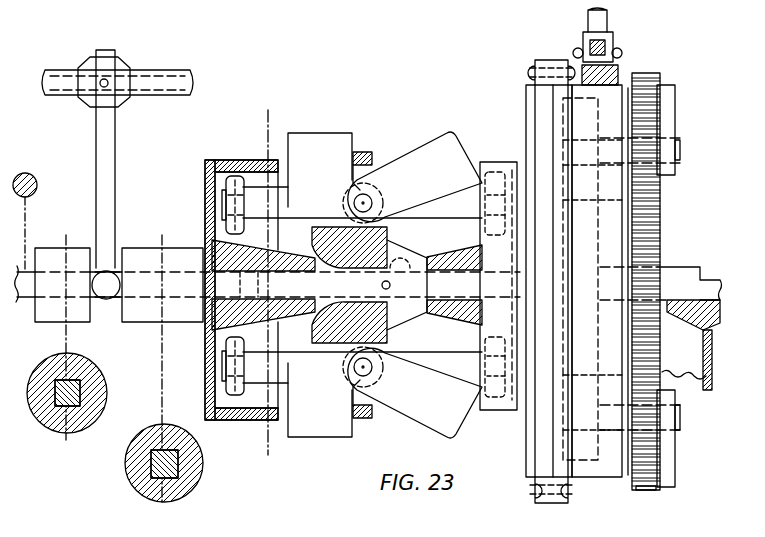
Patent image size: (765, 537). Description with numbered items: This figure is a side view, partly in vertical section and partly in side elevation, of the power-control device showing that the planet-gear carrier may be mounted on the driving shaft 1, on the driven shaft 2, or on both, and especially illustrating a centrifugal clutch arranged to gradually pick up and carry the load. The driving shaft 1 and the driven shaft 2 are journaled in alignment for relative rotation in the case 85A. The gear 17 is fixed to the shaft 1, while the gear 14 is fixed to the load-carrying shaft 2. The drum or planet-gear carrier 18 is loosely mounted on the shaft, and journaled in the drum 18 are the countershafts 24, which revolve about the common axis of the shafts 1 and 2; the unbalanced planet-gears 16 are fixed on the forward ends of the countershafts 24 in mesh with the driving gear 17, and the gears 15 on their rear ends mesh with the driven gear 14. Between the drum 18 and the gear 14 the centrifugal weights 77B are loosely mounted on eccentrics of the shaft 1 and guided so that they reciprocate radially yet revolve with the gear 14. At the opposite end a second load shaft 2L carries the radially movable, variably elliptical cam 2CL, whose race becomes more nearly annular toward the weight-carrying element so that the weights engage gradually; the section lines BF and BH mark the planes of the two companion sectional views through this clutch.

The driving shaft 1 is at (683, 267).
The driven shaft 2 is at (454, 285).
The second load shaft 2L is at (21, 302).
The variably elliptical cam 2CL is at (203, 190).
The section line BF— BF is at (234, 422).
The section line BH— BH is at (271, 283).
The driven gear 14 is at (592, 345).
The gears on countershaft rear ends 15 is at (595, 388).
The planet-gears 16 is at (648, 492).
The driving gear 17 is at (660, 243).
The drum or planet-gear carrier 18 is at (480, 340).
The countershafts 24 is at (677, 140).
The centrifugal weights 77B is at (410, 152).
The case 85A is at (710, 378).